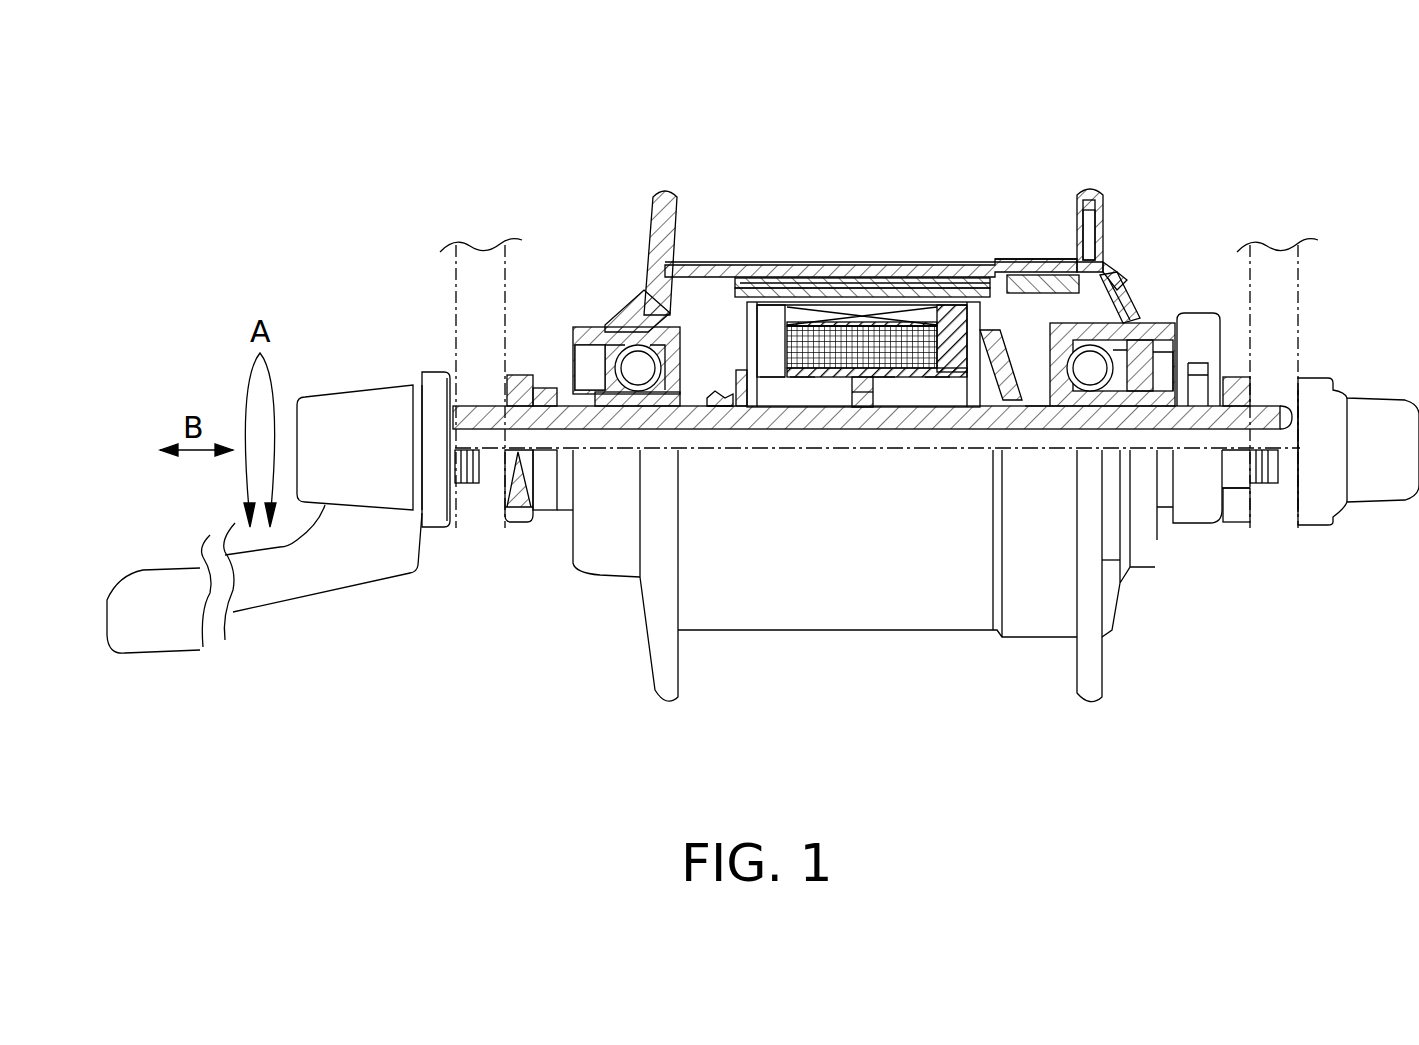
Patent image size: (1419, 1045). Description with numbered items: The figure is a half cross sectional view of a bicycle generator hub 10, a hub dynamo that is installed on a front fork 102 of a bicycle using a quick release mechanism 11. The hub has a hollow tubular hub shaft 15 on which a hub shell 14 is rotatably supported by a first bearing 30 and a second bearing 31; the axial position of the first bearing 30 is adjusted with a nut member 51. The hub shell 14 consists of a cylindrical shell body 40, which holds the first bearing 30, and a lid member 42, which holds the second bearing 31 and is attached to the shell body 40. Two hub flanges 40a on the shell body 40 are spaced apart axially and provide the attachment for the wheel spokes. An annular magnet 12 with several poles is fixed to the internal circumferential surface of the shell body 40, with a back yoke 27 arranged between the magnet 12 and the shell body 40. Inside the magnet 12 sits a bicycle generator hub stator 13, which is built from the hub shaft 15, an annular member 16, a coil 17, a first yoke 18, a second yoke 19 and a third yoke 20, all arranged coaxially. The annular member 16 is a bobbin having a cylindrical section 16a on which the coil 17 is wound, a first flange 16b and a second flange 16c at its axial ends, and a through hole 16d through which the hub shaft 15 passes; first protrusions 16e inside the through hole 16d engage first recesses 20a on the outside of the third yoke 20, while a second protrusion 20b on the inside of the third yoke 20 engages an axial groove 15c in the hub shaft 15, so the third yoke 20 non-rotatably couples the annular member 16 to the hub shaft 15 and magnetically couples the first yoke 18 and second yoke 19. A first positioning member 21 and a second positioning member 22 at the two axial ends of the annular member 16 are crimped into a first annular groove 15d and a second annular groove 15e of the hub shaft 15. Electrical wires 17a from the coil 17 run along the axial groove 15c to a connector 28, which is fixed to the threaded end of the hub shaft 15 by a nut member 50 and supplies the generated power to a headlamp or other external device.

The bicycle generator hub 10 is at (875, 200).
The quick release mechanism 11 is at (400, 407).
The annular magnet 12 is at (830, 265).
The bicycle generator hub stator 13 is at (860, 270).
The hub shell 14 is at (977, 255).
The hub shaft 15 is at (640, 330).
The axial groove 15c is at (1160, 343).
The first annular groove 15d is at (720, 406).
The second annular groove 15e is at (1040, 406).
The annular member 16 is at (737, 327).
The cylindrical section 16a is at (940, 377).
The first flange 16b is at (790, 377).
The second flange 16c is at (965, 377).
The through hole 16d is at (800, 377).
The first protrusion 16e is at (880, 377).
The coil 17 is at (822, 288).
The electrical wire 17a is at (1105, 262).
The first yoke 18 is at (668, 343).
The second yoke 19 is at (1003, 275).
The third yoke 20 is at (910, 377).
The first recess 20a is at (925, 300).
The second protrusion 20b is at (858, 392).
The first positioning member 21 is at (720, 396).
The second positioning member 22 is at (1127, 280).
The back yoke 27 is at (867, 278).
The connector 28 is at (1195, 513).
The first bearing 30 is at (573, 352).
The second bearing 31 is at (1160, 347).
The cylindrical shell body 40 is at (815, 258).
The hub flange 40a is at (665, 697).
The lid member 42 is at (1127, 297).
The nut member 50 is at (1237, 508).
The nut member 51 is at (523, 510).
The front fork 102 is at (1300, 295).